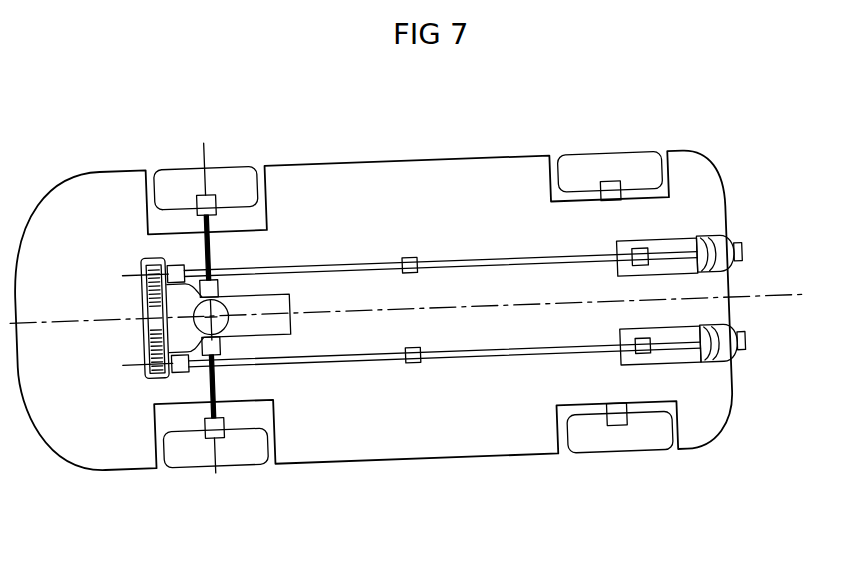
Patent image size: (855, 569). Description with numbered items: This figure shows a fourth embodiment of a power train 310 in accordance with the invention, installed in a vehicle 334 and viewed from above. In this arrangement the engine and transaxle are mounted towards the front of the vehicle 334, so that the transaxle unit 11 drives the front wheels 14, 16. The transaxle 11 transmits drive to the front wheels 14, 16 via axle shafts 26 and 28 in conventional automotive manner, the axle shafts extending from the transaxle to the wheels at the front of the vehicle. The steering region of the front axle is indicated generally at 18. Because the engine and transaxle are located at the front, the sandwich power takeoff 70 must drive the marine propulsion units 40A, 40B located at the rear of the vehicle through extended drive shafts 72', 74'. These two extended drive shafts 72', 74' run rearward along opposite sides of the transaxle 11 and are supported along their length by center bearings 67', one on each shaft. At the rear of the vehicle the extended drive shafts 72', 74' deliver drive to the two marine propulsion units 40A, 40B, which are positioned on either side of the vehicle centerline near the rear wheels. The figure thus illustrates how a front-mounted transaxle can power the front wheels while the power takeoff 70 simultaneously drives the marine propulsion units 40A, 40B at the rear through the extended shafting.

The power train 310 is at (112, 239).
The vehicle 334 is at (422, 218).
The front wheel 14 is at (243, 176).
The front wheel 16 is at (189, 456).
The axle shaft 28 is at (209, 242).
The axle shaft 26 is at (214, 395).
The transaxle unit 11 is at (263, 310).
The sandwich power takeoff 70 is at (137, 386).
The front axle 18 is at (125, 346).
The extended drive shaft 72' is at (438, 187).
The extended drive shaft 74' is at (448, 443).
The center bearing 67' is at (458, 324).
The marine propulsion unit 40A is at (709, 231).
The marine propulsion unit 40B is at (710, 368).